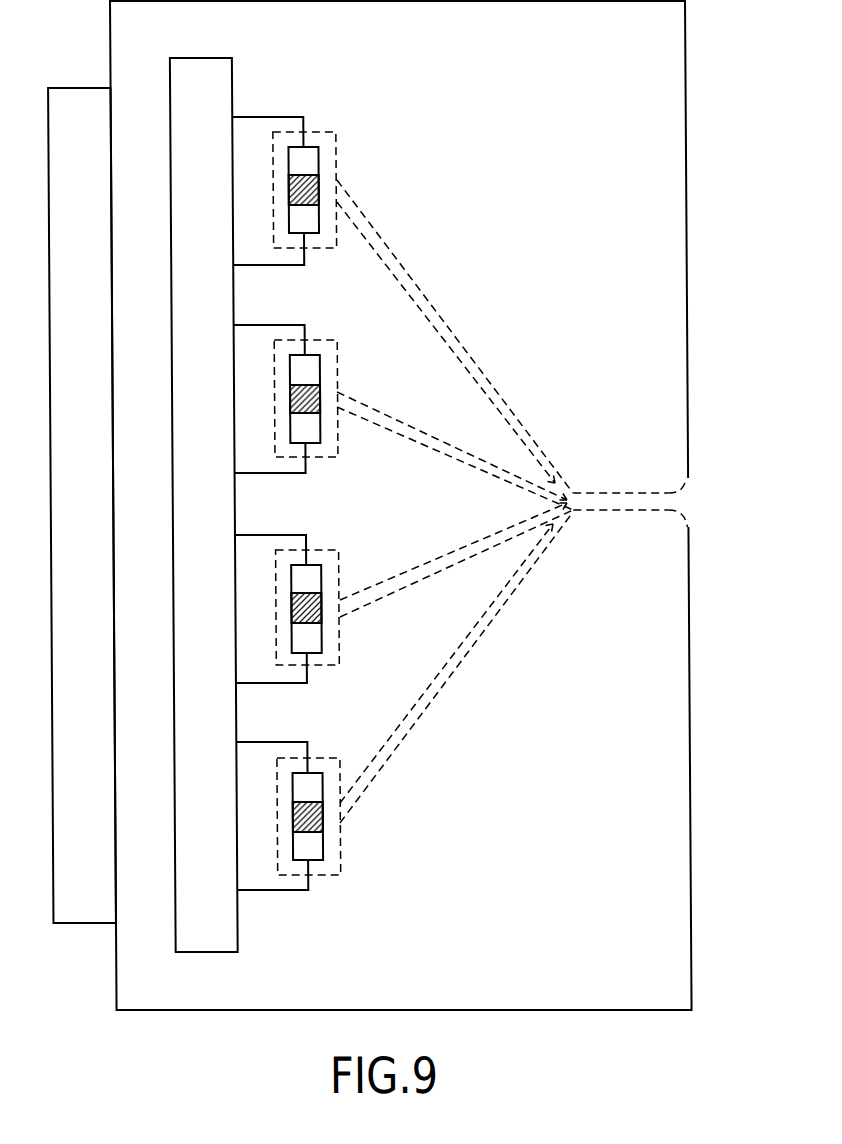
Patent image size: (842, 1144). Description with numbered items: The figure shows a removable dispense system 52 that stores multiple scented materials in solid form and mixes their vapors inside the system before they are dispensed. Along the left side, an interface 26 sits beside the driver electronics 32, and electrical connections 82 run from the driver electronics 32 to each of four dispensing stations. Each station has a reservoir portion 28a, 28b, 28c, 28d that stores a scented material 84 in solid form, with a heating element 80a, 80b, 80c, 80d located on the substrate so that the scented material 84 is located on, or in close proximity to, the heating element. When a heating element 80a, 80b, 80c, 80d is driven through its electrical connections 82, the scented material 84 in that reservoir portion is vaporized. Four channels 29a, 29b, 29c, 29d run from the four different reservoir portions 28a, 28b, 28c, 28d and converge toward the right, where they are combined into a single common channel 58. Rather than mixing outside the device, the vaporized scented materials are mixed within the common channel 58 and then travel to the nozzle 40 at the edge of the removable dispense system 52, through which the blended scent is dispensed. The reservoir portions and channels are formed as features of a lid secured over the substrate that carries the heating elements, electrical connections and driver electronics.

The interface 26 is at (72, 88).
The driver electronics 32 is at (183, 58).
The electrical connections 82 is at (247, 117).
The first reservoir portion 28a is at (319, 132).
The second reservoir portion 28b is at (318, 340).
The third reservoir portion 28c is at (317, 550).
The fourth reservoir portion 28d is at (310, 758).
The first heating element 80a is at (316, 148).
The second heating element 80b is at (317, 370).
The third heating element 80c is at (318, 580).
The fourth heating element 80d is at (318, 773).
The scented material 84 is at (308, 175).
The first channel 29a is at (455, 342).
The second channel 29b is at (387, 413).
The third channel 29c is at (386, 593).
The fourth channel 29d is at (458, 663).
The common channel 58 is at (615, 491).
The nozzle 40 is at (677, 484).
The removable dispense system 52 is at (581, 1010).